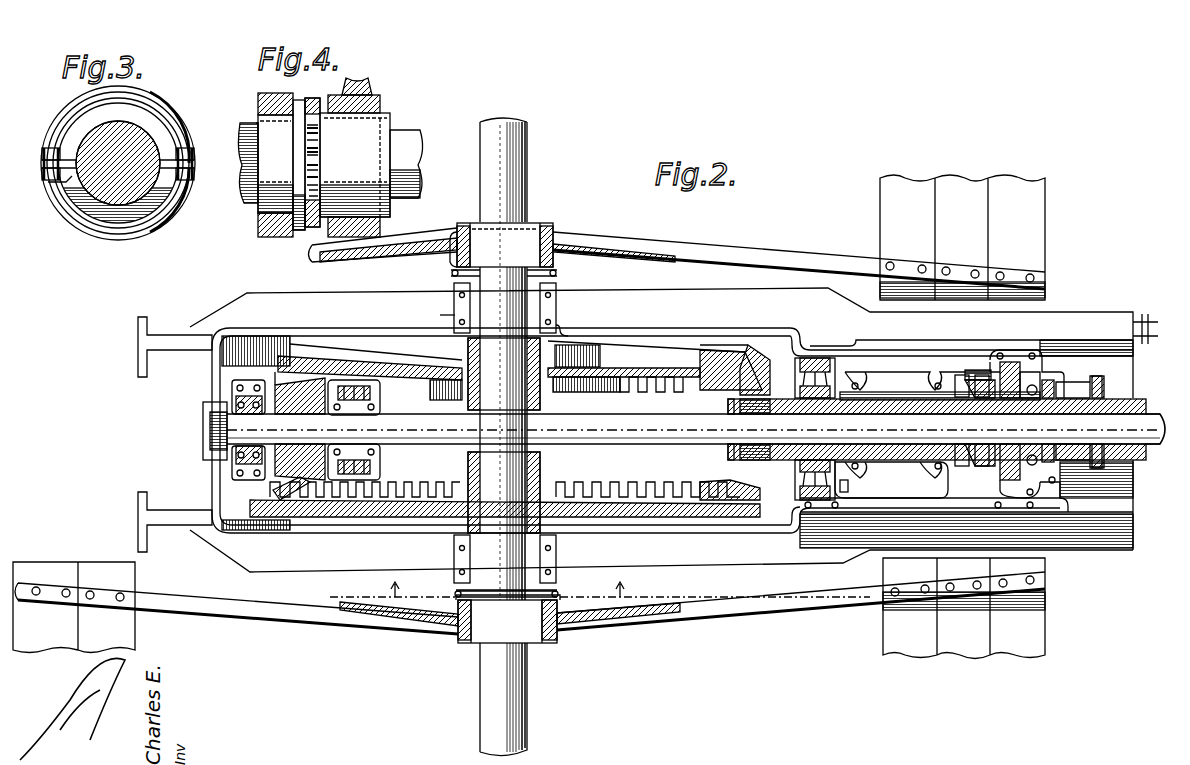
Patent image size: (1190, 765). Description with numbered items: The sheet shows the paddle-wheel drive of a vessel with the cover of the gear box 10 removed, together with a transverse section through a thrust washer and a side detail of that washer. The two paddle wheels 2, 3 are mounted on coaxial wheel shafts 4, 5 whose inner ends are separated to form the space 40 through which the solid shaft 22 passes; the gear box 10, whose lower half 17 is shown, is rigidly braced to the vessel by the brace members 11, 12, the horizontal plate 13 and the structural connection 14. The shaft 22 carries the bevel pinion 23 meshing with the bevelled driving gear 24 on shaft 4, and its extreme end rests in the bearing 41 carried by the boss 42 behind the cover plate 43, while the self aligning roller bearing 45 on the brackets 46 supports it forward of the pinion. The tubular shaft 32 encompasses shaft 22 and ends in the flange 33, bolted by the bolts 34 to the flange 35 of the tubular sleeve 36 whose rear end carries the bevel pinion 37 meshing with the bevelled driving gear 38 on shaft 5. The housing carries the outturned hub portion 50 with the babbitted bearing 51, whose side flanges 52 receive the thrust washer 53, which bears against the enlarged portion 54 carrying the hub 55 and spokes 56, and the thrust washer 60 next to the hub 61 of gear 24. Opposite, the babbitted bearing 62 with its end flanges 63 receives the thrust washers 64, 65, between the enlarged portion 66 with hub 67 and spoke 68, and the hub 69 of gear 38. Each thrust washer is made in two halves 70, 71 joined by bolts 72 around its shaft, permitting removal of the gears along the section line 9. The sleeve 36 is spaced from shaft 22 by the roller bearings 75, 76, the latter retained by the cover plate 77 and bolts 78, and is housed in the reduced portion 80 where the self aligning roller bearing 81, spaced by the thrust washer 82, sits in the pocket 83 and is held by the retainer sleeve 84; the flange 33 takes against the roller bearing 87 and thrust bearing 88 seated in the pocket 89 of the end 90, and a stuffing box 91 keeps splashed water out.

In FIG. 2, the paddle wheel 2 is at (888, 208).
In FIG. 2, the paddle wheel 3 is at (60, 570).
In FIG. 2, the wheel shaft 4 is at (522, 165).
In FIG. 3, the wheel shaft 5 is at (118, 200).
In FIG. 4, the wheel shaft 5 is at (248, 133).
In FIG. 2, the wheel shaft 5 is at (490, 678).
In FIG. 2, the line of section 9 is at (600, 593).
In FIG. 2, the gear box housing 10 is at (333, 327).
In FIG. 2, the brace member 11 is at (130, 368).
In FIG. 2, the brace member 12 is at (128, 500).
In FIG. 2, the horizontal plate 13 is at (745, 302).
In FIG. 2, the structural connection 14 is at (1150, 312).
In FIG. 2, the lower half of housing 17 is at (388, 318).
In FIG. 2, the solid shaft 22 is at (1155, 412).
In FIG. 2, the bevel pinion 23 is at (300, 480).
In FIG. 2, the bevelled driving gear 24 is at (395, 356).
In FIG. 2, the tubular shaft 32 is at (1140, 460).
In FIG. 2, the flange 33 is at (992, 362).
In FIG. 2, the bolt 34 is at (955, 382).
In FIG. 2, the flange 35 is at (956, 372).
In FIG. 2, the tubular sleeve 36 is at (890, 396).
In FIG. 2, the bevel pinion 37 is at (752, 360).
In FIG. 2, the bevelled driving gear 38 is at (700, 482).
In FIG. 2, the space 40 is at (560, 446).
In FIG. 2, the bearing 41 is at (232, 468).
In FIG. 2, the boss 42 is at (250, 380).
In FIG. 2, the cover plate 43 is at (203, 412).
In FIG. 2, the self aligning roller bearing 45 is at (410, 406).
In FIG. 2, the bracket 46 is at (410, 468).
In FIG. 3, the outturned hub portion 50 is at (158, 113).
In FIG. 4, the outturned hub portion 50 is at (270, 74).
In FIG. 2, the outturned hub portion 50 is at (455, 303).
In FIG. 2, the babbitted bearing 51 is at (432, 315).
In FIG. 2, the side flange 52 is at (451, 273).
In FIG. 2, the thrust washer 53 is at (560, 270).
In FIG. 2, the enlarged portion of shaft 54 is at (478, 228).
In FIG. 2, the hub 55 is at (450, 232).
In FIG. 2, the spoke 56 is at (662, 248).
In FIG. 2, the thrust washer 60 is at (580, 330).
In FIG. 2, the hub 61 is at (468, 356).
In FIG. 4, the babbitted bearing 62 is at (260, 112).
In FIG. 2, the babbitted bearing 62 is at (458, 572).
In FIG. 3, the end flange 63 is at (170, 118).
In FIG. 4, the end flange 63 is at (302, 105).
In FIG. 2, the end flange 63 is at (475, 595).
In FIG. 3, the thrust washer 64 is at (78, 108).
In FIG. 4, the thrust washer 64 is at (320, 158).
In FIG. 2, the thrust washer 64 is at (565, 594).
In FIG. 2, the thrust washer 65 is at (495, 505).
In FIG. 4, the enlarged portion of shaft 66 is at (370, 125).
In FIG. 2, the enlarged portion of shaft 66 is at (520, 635).
In FIG. 4, the hub 67 is at (382, 108).
In FIG. 2, the hub 67 is at (557, 630).
In FIG. 4, the spoke 68 is at (362, 92).
In FIG. 2, the spoke 68 is at (665, 622).
In FIG. 2, the hub 69 is at (462, 482).
In FIG. 3, the thrust washer half 70 is at (80, 130).
In FIG. 4, the thrust washer half 70 is at (318, 138).
In FIG. 3, the thrust washer half 71 is at (66, 182).
In FIG. 4, the thrust washer half 71 is at (318, 190).
In FIG. 3, the bolt 72 is at (48, 172).
In FIG. 2, the roller bearing 75 is at (891, 480).
In FIG. 2, the roller bearing 76 is at (732, 452).
In FIG. 2, the cover plate 77 is at (728, 408).
In FIG. 2, the bolt 78 is at (690, 394).
In FIG. 2, the reduced portion of gear casing 80 is at (905, 356).
In FIG. 2, the self aligning roller bearing 81 is at (838, 478).
In FIG. 2, the thrust washer 82 is at (812, 360).
In FIG. 2, the pocket 83 is at (848, 490).
In FIG. 2, the retainer sleeve 84 is at (870, 388).
In FIG. 2, the roller bearing 87 is at (1008, 350).
In FIG. 2, the thrust bearing 88 is at (1036, 372).
In FIG. 2, the pocket 89 is at (1058, 378).
In FIG. 2, the end of housing 90 is at (1085, 380).
In FIG. 2, the stuffing box 91 is at (1096, 376).